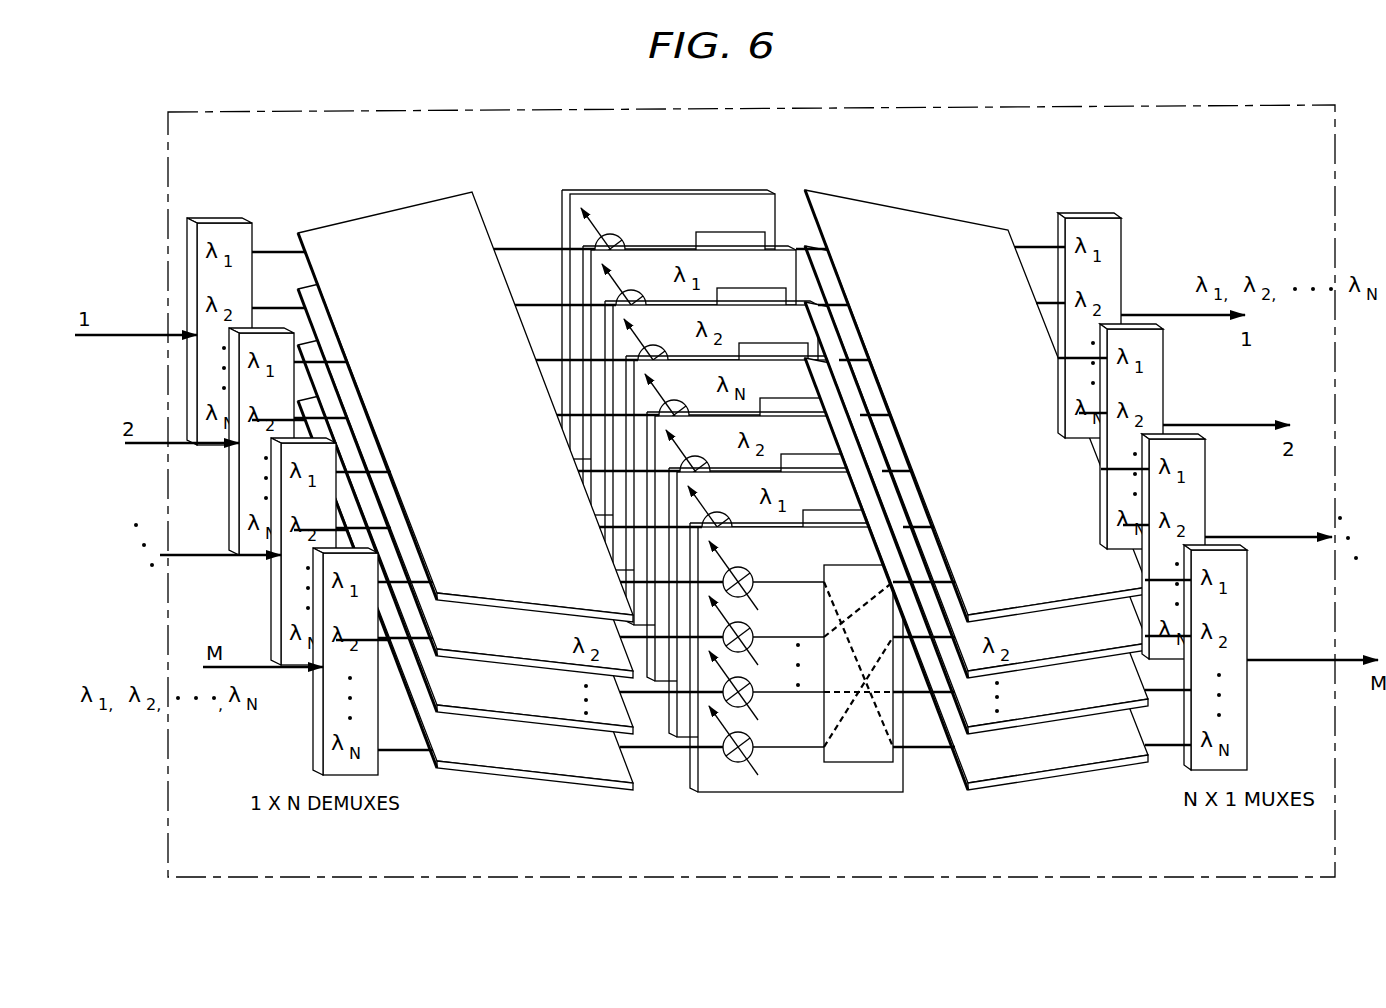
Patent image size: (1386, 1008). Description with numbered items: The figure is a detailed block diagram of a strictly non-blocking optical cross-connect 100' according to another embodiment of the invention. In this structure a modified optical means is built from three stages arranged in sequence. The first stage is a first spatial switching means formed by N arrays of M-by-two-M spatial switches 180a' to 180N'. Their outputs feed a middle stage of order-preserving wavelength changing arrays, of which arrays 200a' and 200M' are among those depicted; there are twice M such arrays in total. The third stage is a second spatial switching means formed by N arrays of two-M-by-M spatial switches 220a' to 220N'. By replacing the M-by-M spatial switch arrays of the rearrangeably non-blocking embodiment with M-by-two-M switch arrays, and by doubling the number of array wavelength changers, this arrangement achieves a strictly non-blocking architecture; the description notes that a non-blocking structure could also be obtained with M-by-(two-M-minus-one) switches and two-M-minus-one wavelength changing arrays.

The strictly non-blocking optical cross-connect 100' is at (751, 458).
The M×2M spatial switch array 180a' is at (465, 379).
The M×2M spatial switch array 180N' is at (465, 610).
The order-preserving wavelength changing array 200a' is at (668, 297).
The order-preserving wavelength changing array 200M' is at (847, 688).
The 2M×M spatial switch array 220a' is at (976, 379).
The 2M×M spatial switch array 220N' is at (976, 605).